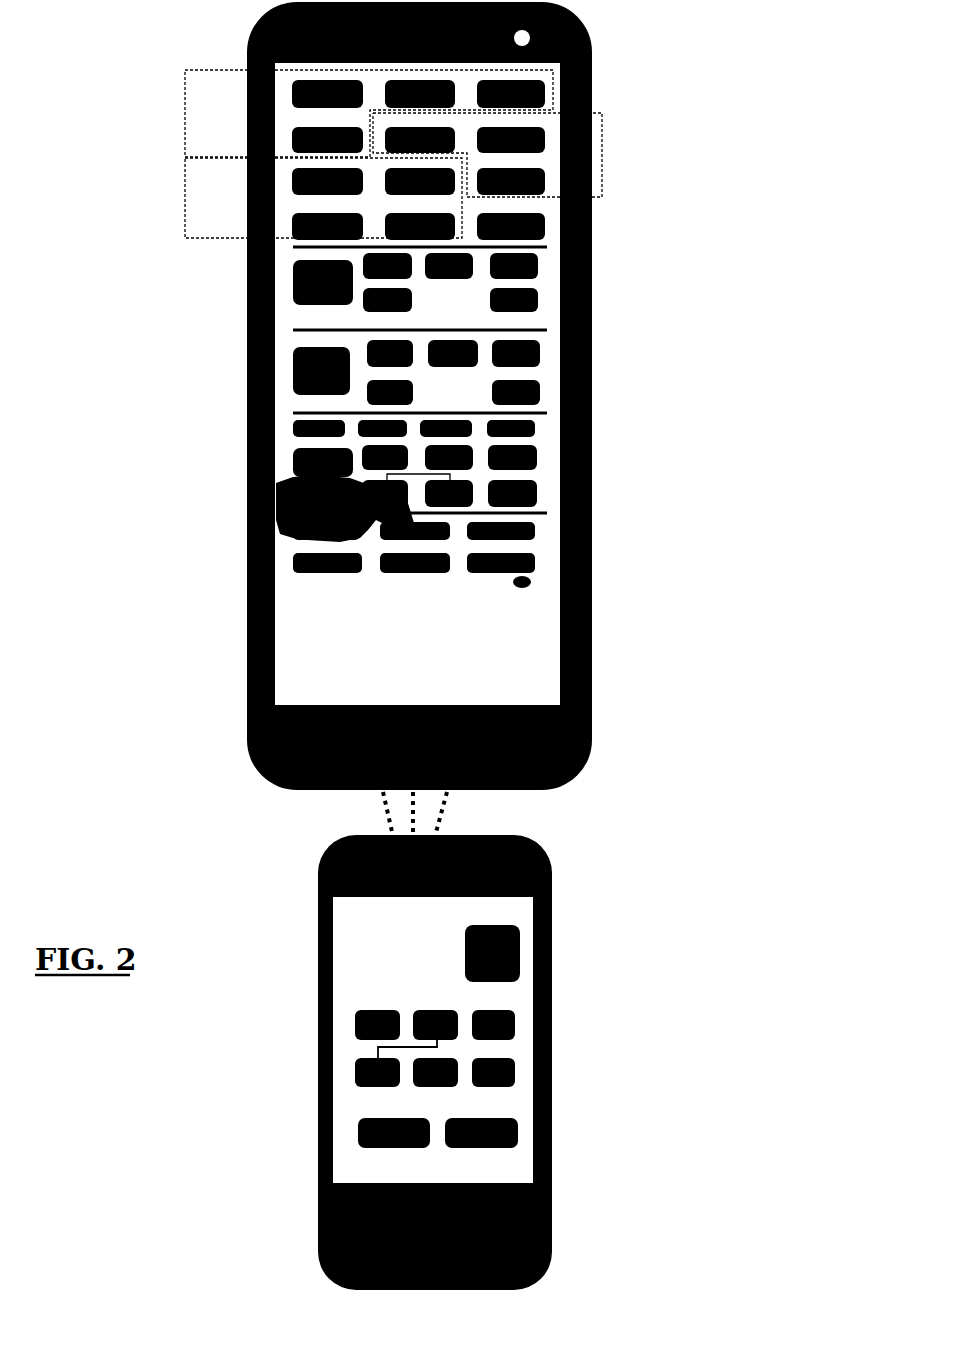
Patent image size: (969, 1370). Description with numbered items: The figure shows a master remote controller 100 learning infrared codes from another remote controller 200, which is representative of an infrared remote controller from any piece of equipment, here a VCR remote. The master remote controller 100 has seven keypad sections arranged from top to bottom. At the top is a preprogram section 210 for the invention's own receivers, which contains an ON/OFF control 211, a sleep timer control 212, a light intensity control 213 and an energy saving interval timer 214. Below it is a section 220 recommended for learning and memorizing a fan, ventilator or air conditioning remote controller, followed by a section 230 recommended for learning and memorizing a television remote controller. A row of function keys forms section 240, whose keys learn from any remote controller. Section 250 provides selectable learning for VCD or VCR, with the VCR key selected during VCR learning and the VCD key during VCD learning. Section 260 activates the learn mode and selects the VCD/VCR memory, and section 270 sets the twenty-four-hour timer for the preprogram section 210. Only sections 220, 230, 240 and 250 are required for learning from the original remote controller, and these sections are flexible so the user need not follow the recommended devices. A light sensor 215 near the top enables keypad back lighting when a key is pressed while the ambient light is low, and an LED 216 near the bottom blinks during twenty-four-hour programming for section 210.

The master remote controller 100 is at (247, 432).
The remote controller 200 is at (552, 1018).
The preprogram section 210 is at (553, 156).
The ON/OFF control 211 is at (175, 103).
The sleep timer control 212 is at (175, 195).
The light intensity control 213 is at (603, 133).
The energy saving interval timer 214 is at (545, 221).
The light sensor 215 is at (587, 37).
The LED 216 is at (609, 599).
The fan/ventilator/air conditioning learning section 220 is at (553, 291).
The television learning section 230 is at (554, 372).
The F1-F4 learn keys section 240 is at (554, 421).
The VCD/VCR selectable learn section 250 is at (554, 475).
The learn mode activation section 260 is at (554, 522).
The 24-hour timer setting section 270 is at (553, 558).